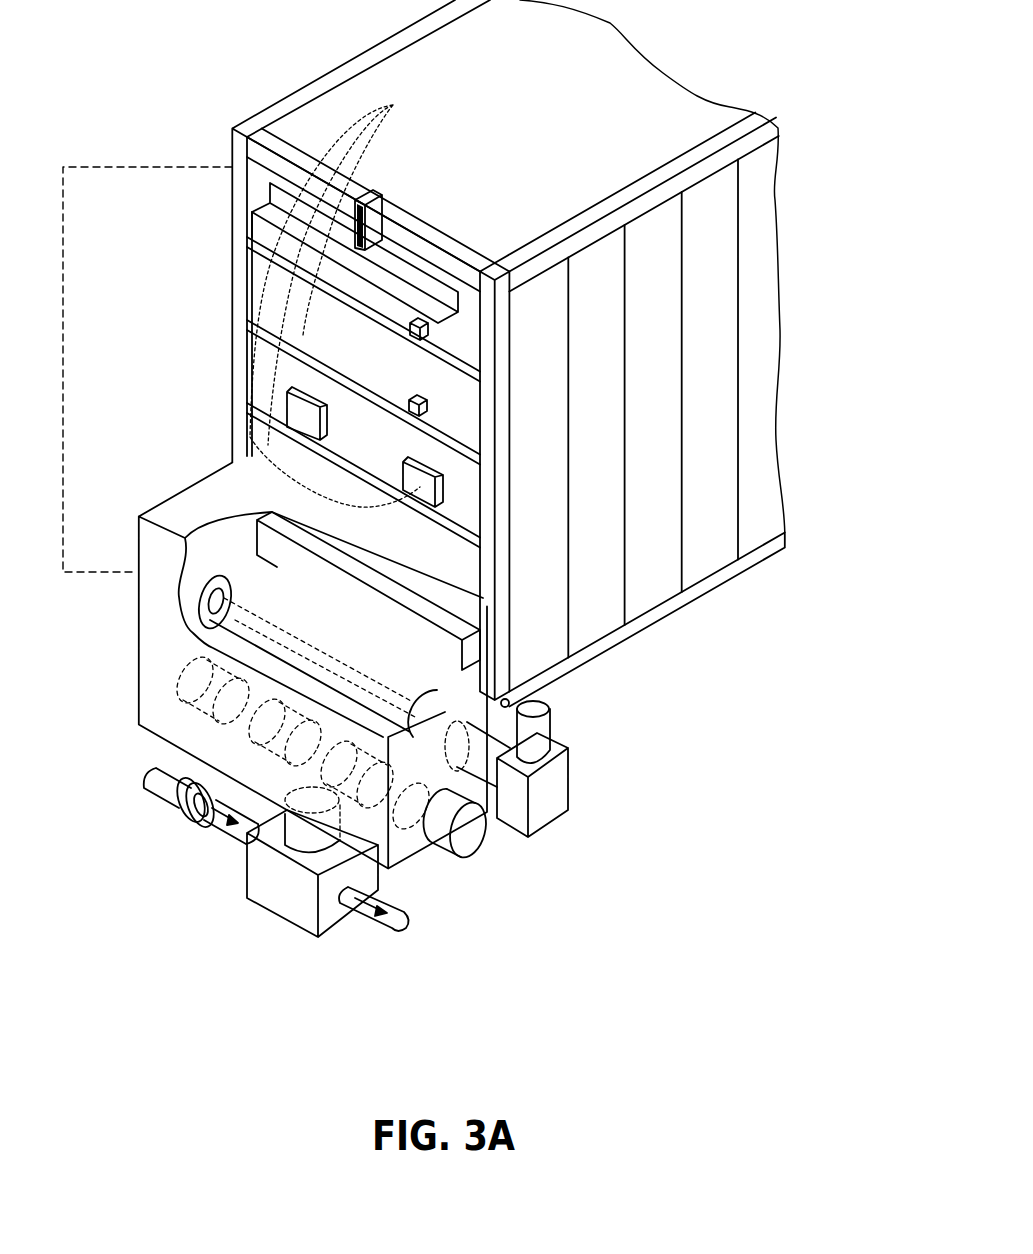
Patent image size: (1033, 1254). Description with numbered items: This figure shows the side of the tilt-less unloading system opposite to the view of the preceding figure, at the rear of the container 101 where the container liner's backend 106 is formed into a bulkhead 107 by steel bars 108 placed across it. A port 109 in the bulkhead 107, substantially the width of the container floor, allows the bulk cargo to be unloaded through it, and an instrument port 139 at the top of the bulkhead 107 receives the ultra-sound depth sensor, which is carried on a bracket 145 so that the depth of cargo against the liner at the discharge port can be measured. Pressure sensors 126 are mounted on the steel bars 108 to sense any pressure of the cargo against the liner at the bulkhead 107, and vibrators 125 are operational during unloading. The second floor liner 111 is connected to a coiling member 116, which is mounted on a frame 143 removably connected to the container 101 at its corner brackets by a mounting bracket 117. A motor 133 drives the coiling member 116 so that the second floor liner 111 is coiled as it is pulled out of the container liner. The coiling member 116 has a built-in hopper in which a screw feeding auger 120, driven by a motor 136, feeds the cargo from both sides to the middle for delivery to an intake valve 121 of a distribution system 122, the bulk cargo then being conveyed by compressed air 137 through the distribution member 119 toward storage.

The container 101 is at (757, 206).
The backend 106 is at (430, 240).
The bulkhead 107 is at (265, 287).
The steel bars 108 is at (393, 105).
The port 109 is at (217, 523).
The second floor liner 111 is at (277, 600).
The coiling member 116 is at (257, 628).
The mounting bracket 117 is at (515, 700).
The distribution member 119 is at (277, 850).
The screw feeding auger 120 is at (191, 717).
The intake valve 121 is at (322, 813).
The distribution system 122 is at (273, 897).
The vibrators 125 is at (307, 420).
The pressure sensors 126 is at (430, 410).
The motor 133 is at (552, 783).
The motor 136 is at (470, 845).
The compressed air 137 is at (215, 830).
The instrument port 139 is at (277, 200).
The frame 143 is at (537, 727).
The bracket 145 is at (378, 200).